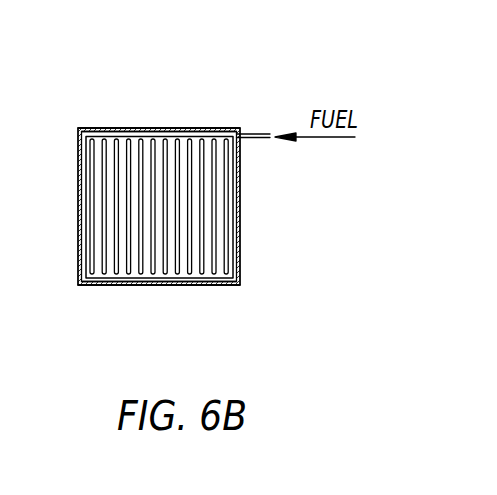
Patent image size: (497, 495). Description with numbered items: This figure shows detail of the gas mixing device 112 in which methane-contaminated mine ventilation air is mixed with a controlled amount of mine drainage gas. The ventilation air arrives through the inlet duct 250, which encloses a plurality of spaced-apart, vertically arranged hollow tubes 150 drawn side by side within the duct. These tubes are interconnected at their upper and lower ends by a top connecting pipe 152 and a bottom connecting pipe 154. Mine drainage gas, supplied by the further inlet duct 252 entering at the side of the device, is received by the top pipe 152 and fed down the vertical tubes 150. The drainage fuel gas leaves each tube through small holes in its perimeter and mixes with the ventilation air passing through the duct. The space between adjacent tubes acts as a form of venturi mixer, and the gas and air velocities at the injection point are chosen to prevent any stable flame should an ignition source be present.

The mixing device 112 is at (283, 103).
The inlet duct 250 is at (78, 232).
The top connecting pipe 152 is at (132, 128).
The bottom connecting pipe 154 is at (175, 285).
The vertical hollow tubes 150 is at (210, 202).
The further inlet duct 252 is at (260, 140).